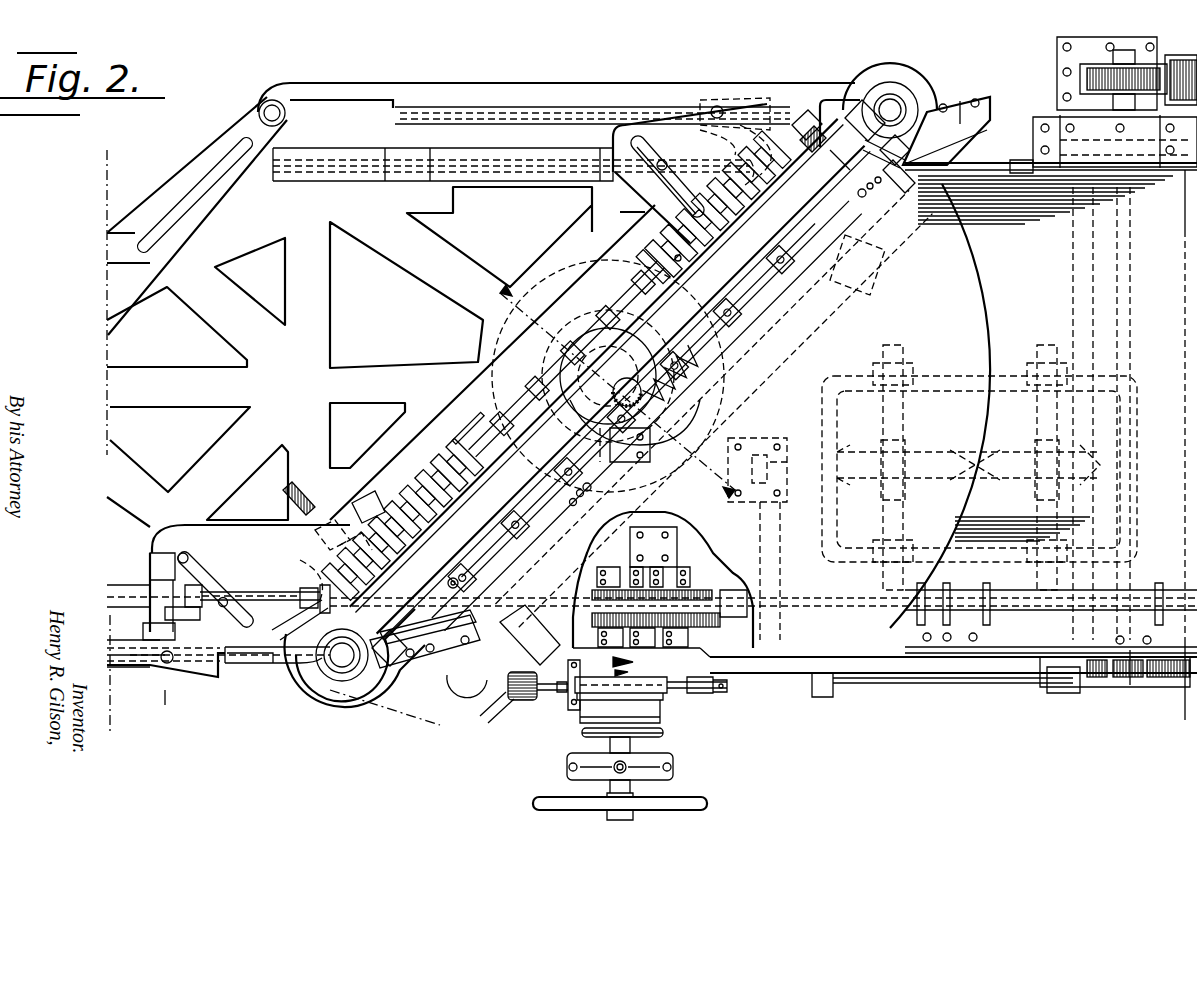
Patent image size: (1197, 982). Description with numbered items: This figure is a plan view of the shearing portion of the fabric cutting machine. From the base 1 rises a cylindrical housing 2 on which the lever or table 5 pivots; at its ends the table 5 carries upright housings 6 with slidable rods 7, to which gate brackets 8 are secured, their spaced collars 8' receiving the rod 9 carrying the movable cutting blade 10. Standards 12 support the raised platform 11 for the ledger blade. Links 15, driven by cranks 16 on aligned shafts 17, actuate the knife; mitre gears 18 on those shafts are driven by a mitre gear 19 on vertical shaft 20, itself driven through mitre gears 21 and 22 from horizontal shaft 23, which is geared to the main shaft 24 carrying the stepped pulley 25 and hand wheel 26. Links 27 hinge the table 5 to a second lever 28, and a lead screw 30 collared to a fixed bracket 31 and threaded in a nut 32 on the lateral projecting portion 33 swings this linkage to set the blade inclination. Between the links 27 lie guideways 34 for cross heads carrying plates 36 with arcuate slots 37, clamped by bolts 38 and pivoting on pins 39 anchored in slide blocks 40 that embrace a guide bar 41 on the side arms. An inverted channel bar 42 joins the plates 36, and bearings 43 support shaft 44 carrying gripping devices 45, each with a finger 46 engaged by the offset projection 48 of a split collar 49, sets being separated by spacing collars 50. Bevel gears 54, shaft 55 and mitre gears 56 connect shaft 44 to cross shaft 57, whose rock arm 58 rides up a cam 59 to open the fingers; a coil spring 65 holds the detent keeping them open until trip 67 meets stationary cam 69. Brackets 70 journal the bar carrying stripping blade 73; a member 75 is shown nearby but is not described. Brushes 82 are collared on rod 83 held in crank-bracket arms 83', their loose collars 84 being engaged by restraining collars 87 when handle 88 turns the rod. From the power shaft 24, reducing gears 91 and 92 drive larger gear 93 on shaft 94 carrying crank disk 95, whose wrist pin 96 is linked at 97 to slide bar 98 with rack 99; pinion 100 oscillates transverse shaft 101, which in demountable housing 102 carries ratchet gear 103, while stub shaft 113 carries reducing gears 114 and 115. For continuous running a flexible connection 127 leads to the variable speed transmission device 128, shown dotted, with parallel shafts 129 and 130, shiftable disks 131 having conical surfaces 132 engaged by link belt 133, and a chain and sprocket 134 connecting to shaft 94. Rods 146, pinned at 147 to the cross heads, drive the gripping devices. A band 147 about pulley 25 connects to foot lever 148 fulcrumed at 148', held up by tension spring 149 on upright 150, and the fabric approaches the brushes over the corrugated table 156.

The base 1 is at (318, 353).
The cylindrical housing 2 is at (480, 350).
The lever or table 5 is at (898, 66).
The upright housings 6 is at (905, 90).
The rods 7 is at (897, 108).
The gate bracket 8 is at (644, 439).
The spaced collars 8' is at (606, 446).
The rod 9 is at (537, 430).
The movable or cutting blade 10 is at (545, 460).
The raised platform 11 is at (985, 138).
The standards 12 is at (982, 95).
The links 15 is at (385, 685).
The cranks 16 is at (455, 712).
The aligned shafts 17 is at (655, 392).
The mitre gears 18 is at (629, 396).
The mitre gear 19 is at (645, 395).
The vertical shaft 20 is at (612, 325).
The mitre gear 21 is at (660, 405).
The mitre gear 22 is at (645, 445).
The horizontal shaft 23 is at (615, 553).
The main shaft 24 is at (630, 670).
The stepped pulley 25 is at (665, 733).
The hand wheel 26 is at (700, 800).
The links 27 is at (635, 85).
The second lever 28 is at (187, 174).
The lead screw 30 is at (295, 505).
The fixed bracket 31 is at (470, 670).
The nut 32 is at (330, 525).
The lateral projecting portion 33 is at (345, 520).
The parallel guideways 34 is at (528, 183).
The plate 36 is at (667, 125).
The arcuate slot 37 is at (675, 185).
The bolts 38 is at (665, 162).
The pins 39 is at (720, 104).
The slide blocks 40 is at (770, 100).
The rod 41 is at (590, 120).
The inverted channel bar 42 is at (668, 260).
The bearings 43 is at (315, 575).
The shaft 44 is at (788, 123).
The gripping devices 45 is at (670, 282).
The finger 46 is at (566, 389).
The offset projection 48 is at (488, 432).
The split collar 49 is at (718, 215).
The spacing collars 50 is at (675, 255).
The bevel gears 54 is at (292, 625).
The shaft 55 is at (265, 592).
The mitre gears 56 is at (184, 553).
The cross shaft 57 is at (180, 622).
The depending rock arm 58 is at (110, 640).
The cam 59 is at (110, 655).
The coil spring 65 is at (812, 145).
The trip 67 is at (823, 100).
The stationary cam 69 is at (870, 195).
The brackets 70 is at (910, 187).
The stripping blade 73 is at (783, 293).
The bar 75 is at (410, 640).
The combs or brushes 82 is at (745, 332).
The rod 83 is at (519, 555).
The crank-bracket arms 83' is at (914, 150).
The loose collars 84 is at (690, 355).
The restraining collars 87 is at (545, 525).
The handle 88 is at (960, 175).
The reducing gear 91 is at (690, 590).
The reducing gear 92 is at (707, 583).
The larger gear 93 is at (855, 617).
The shaft 94 is at (765, 533).
The crank disk 95 is at (750, 665).
The wrist pin 96 is at (820, 697).
The link 97 is at (935, 683).
The slide bar 98 is at (1095, 688).
The rack 99 is at (1160, 685).
The pinion 100 is at (1140, 685).
The transverse shaft 101 is at (1135, 567).
The demountable housing 102 is at (1060, 92).
The ratchet gear 103 is at (1095, 65).
The stub shaft 113 is at (1178, 50).
The reducing gear 114 is at (1150, 60).
The reducing gear 115 is at (1147, 112).
The flexible connection 127 is at (1010, 590).
The variable speed transmission device 128 is at (962, 367).
The shaft 129 is at (1042, 410).
The shaft 130 is at (905, 410).
The shiftable disks 131 is at (985, 498).
The conical surfaces 132 is at (965, 450).
The flexible link belt 133 is at (840, 450).
The chain and sprocket 134 is at (805, 555).
The rods 146 is at (982, 205).
The band 147 is at (715, 152).
The foot lever 148 is at (508, 706).
The fulcrum 148' is at (706, 701).
The tension spring 149 is at (560, 692).
The upright 150 is at (568, 680).
The table 156 is at (952, 406).